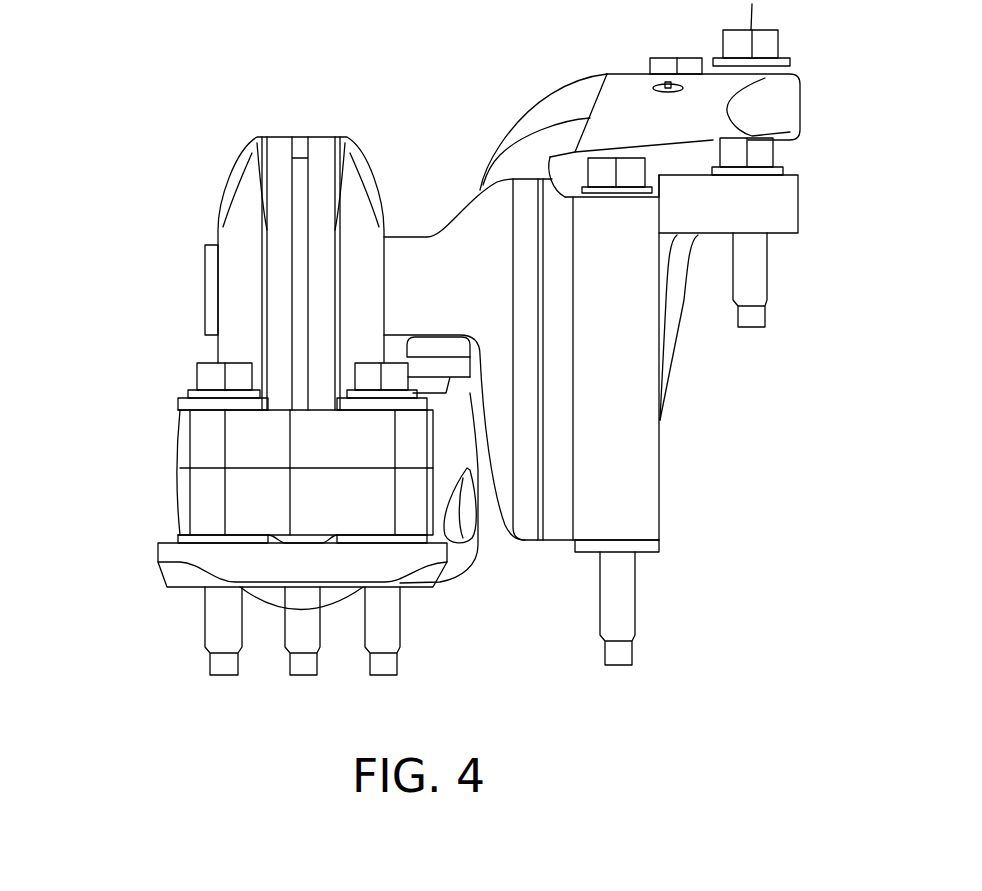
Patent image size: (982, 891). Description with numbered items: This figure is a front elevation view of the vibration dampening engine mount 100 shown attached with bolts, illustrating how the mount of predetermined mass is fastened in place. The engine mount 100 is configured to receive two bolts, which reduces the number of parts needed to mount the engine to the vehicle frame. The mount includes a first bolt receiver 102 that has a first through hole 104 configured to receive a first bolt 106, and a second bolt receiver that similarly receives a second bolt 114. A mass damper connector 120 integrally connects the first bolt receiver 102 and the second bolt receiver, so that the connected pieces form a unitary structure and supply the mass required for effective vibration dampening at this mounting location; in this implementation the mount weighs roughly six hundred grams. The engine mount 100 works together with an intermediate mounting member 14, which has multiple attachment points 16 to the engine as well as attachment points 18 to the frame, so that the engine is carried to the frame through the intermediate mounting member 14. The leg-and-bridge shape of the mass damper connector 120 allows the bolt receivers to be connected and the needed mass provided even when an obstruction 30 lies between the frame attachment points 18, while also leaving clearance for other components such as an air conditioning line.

The intermediate mounting member 14 is at (417, 190).
The attachment points 16 is at (677, 58).
The attachment points 18 is at (203, 588).
The obstruction 30 is at (297, 540).
The vibration dampening engine mount 100 is at (163, 488).
The first bolt receiver 102 is at (207, 407).
The first through hole 104 is at (405, 403).
The first bolt 106 is at (207, 377).
The second bolt 114 is at (397, 375).
The mass damper connector 120 is at (325, 493).